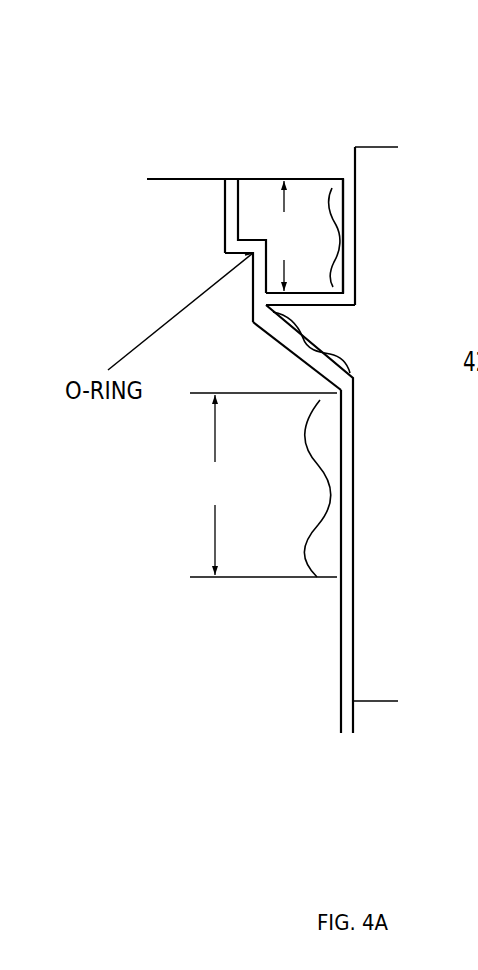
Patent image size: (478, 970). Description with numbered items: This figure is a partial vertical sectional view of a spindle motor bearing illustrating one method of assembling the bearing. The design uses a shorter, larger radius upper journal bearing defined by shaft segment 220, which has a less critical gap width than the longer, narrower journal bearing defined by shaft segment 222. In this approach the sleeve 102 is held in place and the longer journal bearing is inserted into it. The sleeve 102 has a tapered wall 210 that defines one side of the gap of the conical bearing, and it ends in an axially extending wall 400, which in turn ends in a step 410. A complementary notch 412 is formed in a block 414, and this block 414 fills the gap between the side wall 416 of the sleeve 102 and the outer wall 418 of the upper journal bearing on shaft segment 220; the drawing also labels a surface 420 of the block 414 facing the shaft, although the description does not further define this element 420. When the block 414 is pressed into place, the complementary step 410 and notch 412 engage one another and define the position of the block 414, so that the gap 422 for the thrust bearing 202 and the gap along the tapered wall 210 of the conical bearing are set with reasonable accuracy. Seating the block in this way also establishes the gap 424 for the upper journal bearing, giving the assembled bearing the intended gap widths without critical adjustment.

The sleeve 102 is at (265, 561).
The thrust bearing 202 is at (397, 376).
The tapered wall 210 is at (253, 328).
The shaft segment 220 is at (413, 164).
The shaft segment 222 is at (412, 684).
The axially extending wall 400 is at (252, 288).
The step 410 is at (138, 242).
The notch 412 is at (250, 238).
The block 414 is at (298, 193).
The side wall 416 is at (220, 215).
The outer wall 418 is at (355, 195).
The groove side surface 420 is at (347, 242).
The gap 422 is at (335, 302).
The gap 424 is at (343, 197).